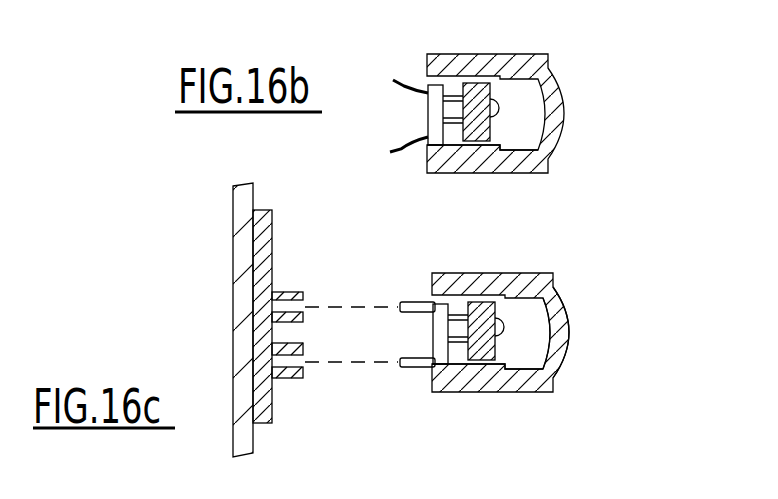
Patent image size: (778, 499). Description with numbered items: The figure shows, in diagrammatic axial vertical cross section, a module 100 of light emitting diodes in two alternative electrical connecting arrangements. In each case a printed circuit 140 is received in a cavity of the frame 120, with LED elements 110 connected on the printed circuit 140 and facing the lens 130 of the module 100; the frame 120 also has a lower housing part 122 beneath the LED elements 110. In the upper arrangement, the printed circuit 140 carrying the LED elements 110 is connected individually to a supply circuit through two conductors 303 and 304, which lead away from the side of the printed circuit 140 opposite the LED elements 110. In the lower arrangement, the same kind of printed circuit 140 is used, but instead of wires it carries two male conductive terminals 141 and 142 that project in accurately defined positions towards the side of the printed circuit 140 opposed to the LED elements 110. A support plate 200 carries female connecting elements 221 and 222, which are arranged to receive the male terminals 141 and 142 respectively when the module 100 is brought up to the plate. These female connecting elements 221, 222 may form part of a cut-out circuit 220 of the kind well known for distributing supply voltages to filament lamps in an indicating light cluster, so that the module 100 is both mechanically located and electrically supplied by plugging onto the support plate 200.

In FIG. 16B, the optoelectronic module 100 is at (484, 117).
In FIG. 16C, the optoelectronic module 100 is at (540, 347).
In FIG. 16B, the LED element 110 is at (479, 128).
In FIG. 16C, the LED element 110 is at (485, 377).
In FIG. 16B, the frame 120 is at (513, 65).
In FIG. 16C, the frame 120 is at (500, 311).
In FIG. 16B, the housing bottom part 122 is at (517, 167).
In FIG. 16C, the housing bottom part 122 is at (500, 414).
In FIG. 16C, the lens 130 is at (587, 332).
In FIG. 16B, the printed circuit 140 is at (427, 111).
In FIG. 16C, the printed circuit 140 is at (457, 297).
In FIG. 16C, the male conductive terminal 141 is at (415, 300).
In FIG. 16C, the male conductive terminal 142 is at (410, 367).
In FIG. 16C, the support plate 200 is at (233, 298).
In FIG. 16C, the cut-out circuit 220 is at (270, 225).
In FIG. 16C, the female connecting element 221 is at (290, 302).
In FIG. 16C, the female connecting element 222 is at (288, 367).
In FIG. 16B, the conductor 303 is at (406, 80).
In FIG. 16B, the conductor 304 is at (410, 153).